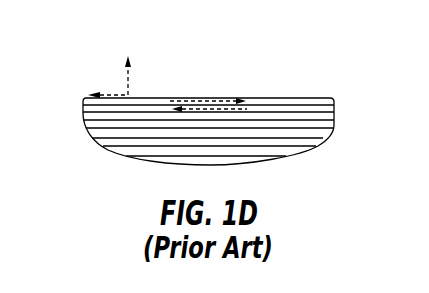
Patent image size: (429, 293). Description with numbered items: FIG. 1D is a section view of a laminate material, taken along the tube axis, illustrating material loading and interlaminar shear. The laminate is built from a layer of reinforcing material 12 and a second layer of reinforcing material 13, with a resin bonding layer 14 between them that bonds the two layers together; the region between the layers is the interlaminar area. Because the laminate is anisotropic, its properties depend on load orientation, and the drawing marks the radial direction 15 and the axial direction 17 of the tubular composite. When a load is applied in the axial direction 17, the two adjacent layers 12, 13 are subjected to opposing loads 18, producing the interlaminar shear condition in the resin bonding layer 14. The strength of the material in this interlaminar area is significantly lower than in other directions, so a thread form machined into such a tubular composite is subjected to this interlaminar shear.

The reinforcing material layer 12 is at (334, 142).
The reinforcing material layer 13 is at (325, 136).
The resin bonding layer 14 is at (322, 111).
The radial direction 15 is at (131, 76).
The axial direction 17 is at (117, 96).
The opposing load 18 is at (210, 102).